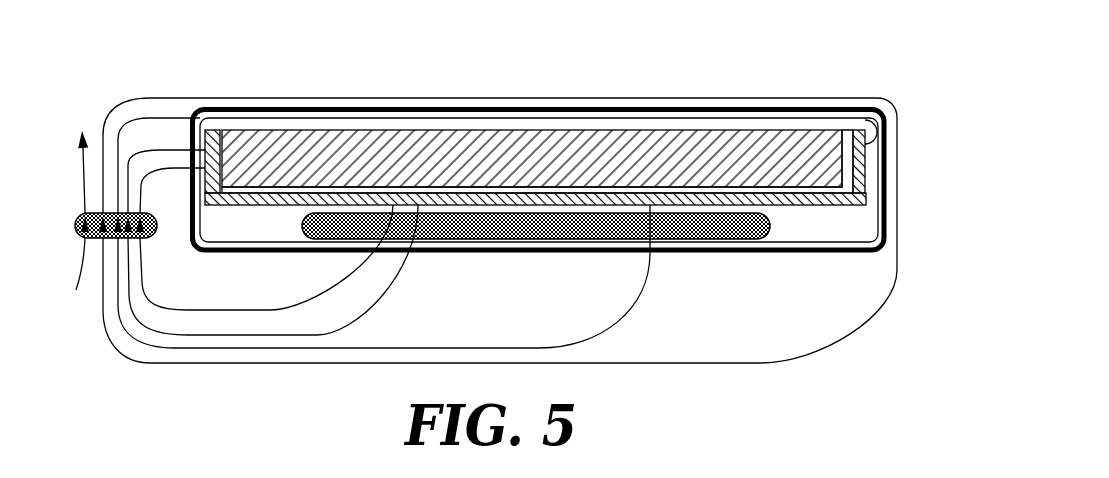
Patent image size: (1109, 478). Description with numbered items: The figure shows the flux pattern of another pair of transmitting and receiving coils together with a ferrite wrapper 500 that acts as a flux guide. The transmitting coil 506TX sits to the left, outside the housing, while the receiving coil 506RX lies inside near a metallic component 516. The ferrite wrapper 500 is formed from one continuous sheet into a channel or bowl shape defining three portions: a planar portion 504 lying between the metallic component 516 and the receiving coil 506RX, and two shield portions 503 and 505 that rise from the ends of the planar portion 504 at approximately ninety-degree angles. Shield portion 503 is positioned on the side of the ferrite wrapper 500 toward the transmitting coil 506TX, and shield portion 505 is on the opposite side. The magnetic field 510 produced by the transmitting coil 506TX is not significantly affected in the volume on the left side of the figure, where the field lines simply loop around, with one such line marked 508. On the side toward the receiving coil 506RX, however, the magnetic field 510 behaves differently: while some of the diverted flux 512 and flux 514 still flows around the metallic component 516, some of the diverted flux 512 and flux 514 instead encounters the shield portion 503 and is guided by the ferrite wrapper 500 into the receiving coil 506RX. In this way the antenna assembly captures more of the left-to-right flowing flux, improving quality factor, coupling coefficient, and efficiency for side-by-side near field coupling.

The ferrite wrapper 500 is at (740, 205).
The shield portion 503 is at (218, 132).
The planar portion 504 is at (517, 192).
The shield portion 505 is at (864, 122).
The transmitting coil 506TX is at (158, 256).
The receiving coil 506RX is at (466, 268).
The electric field line 508 is at (80, 302).
The magnetic field 510 is at (125, 94).
The diverted flux 512 is at (708, 88).
The flux 514 is at (172, 150).
The metallic component 516 is at (635, 130).